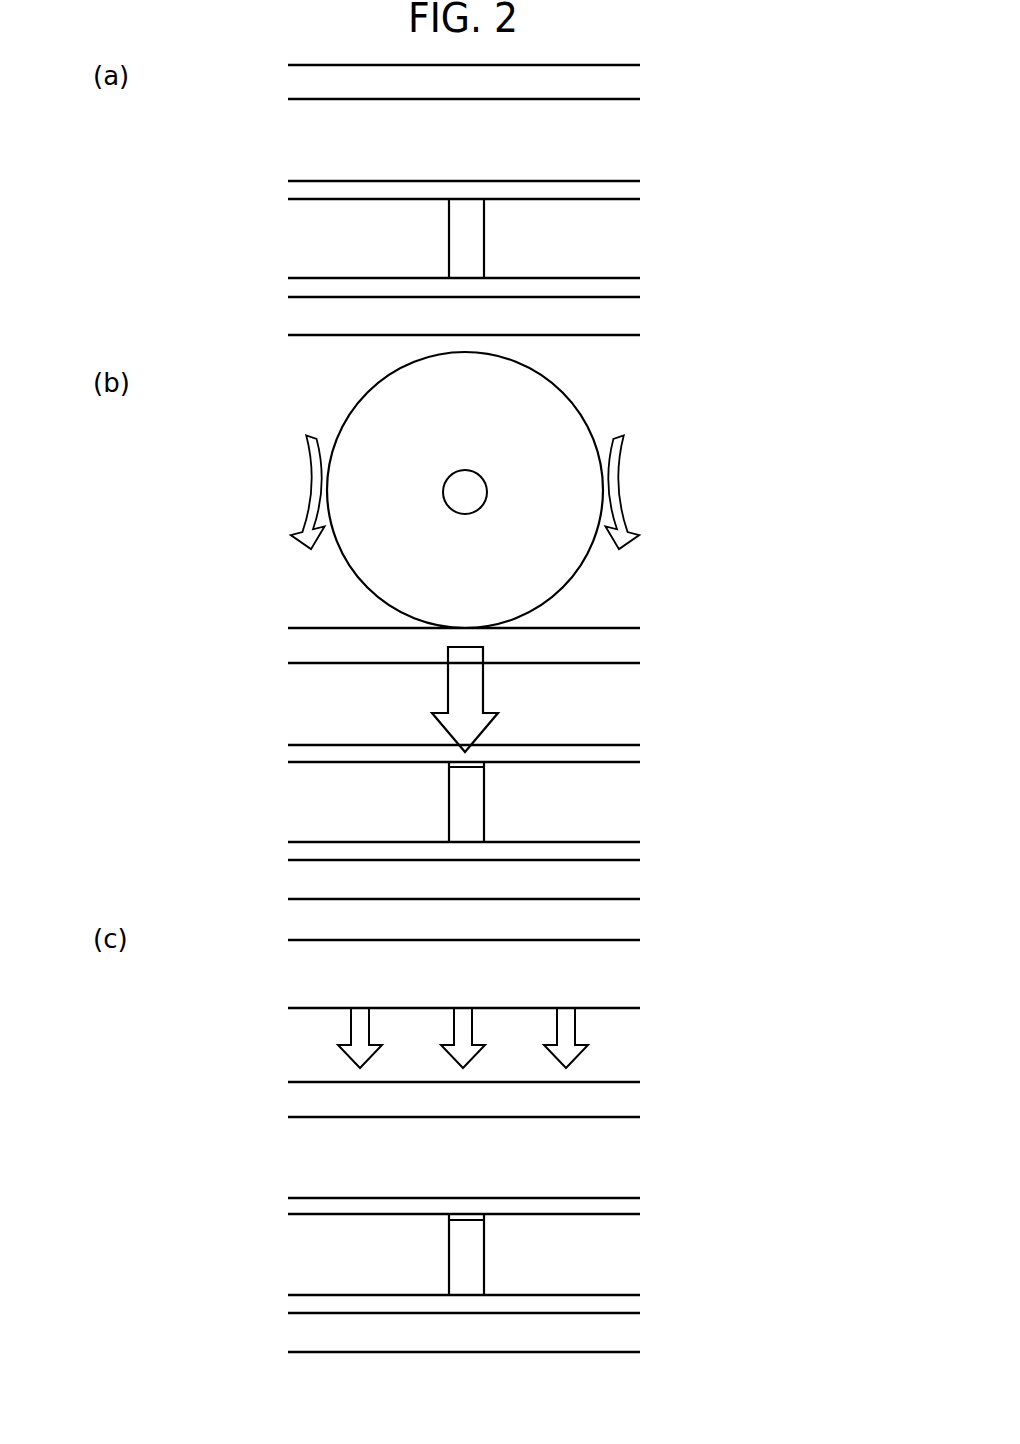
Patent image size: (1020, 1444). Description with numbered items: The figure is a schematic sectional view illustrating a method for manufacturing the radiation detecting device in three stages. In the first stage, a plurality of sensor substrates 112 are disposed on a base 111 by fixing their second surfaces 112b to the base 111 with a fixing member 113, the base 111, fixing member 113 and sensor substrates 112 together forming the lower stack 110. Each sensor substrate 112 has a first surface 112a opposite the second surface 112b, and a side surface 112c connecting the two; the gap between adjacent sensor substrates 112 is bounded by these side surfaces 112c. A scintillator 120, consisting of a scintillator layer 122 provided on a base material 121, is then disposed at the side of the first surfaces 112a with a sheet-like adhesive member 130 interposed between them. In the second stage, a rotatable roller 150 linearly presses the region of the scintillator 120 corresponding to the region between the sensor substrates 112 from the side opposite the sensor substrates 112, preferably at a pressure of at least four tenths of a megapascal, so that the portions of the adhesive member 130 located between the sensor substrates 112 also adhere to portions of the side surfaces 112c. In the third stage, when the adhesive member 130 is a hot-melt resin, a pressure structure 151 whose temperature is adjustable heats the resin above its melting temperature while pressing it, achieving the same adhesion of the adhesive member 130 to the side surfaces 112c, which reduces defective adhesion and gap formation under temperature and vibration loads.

The sensor panel 110 is at (478, 760).
The base 111 is at (727, 1343).
The sensor substrate 112 is at (446, 737).
The first surface 112a is at (320, 199).
The second surface 112b is at (348, 278).
The side surface 112c is at (449, 242).
The fixing member 113 is at (677, 1302).
The scintillator 120 is at (533, 606).
The base material 121 is at (677, 1097).
The scintillator layer 122 is at (727, 1143).
The adhesive member 130 is at (677, 1205).
The roller 150 is at (555, 398).
The pressure structure 151 is at (625, 977).